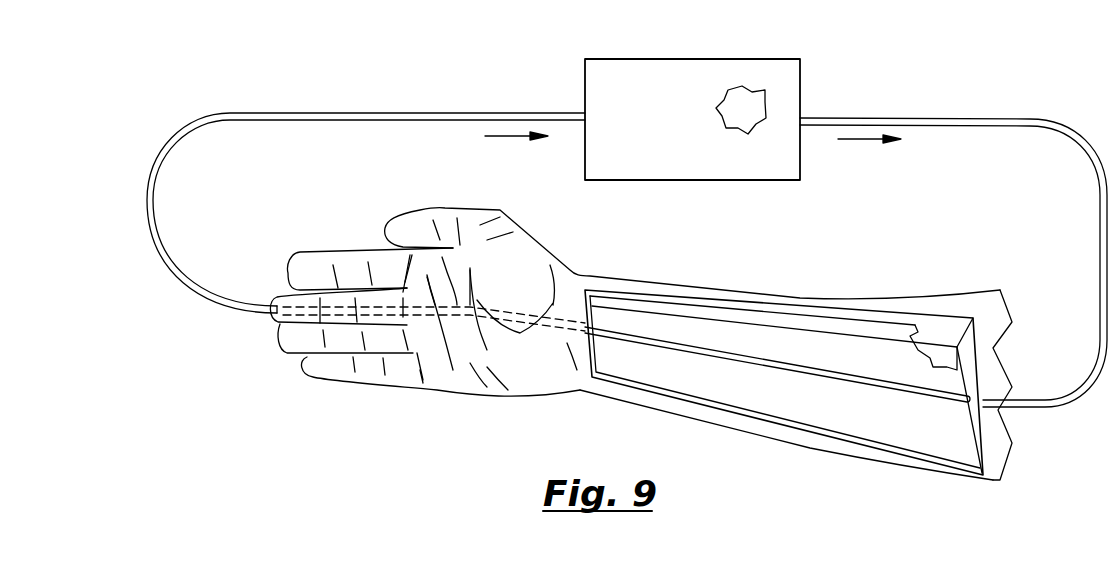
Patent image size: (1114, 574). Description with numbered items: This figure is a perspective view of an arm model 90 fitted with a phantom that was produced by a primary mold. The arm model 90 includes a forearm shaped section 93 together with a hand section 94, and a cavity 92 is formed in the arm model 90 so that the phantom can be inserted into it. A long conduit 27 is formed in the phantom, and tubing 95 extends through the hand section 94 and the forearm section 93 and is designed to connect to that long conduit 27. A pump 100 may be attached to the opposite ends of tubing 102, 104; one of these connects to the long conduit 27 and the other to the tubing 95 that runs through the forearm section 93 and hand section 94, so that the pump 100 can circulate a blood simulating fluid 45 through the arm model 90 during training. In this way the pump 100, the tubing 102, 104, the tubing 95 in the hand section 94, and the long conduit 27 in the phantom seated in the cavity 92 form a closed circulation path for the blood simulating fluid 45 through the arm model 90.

The arm model 90 is at (352, 90).
The tubing 104 is at (548, 119).
The tubing 102 is at (852, 119).
The pump 100 is at (748, 62).
The blood simulating fluid 45 is at (733, 103).
The hand section 94 is at (500, 215).
The tubing 95 is at (527, 325).
The forearm shaped section 93 is at (790, 297).
The cavity 92 is at (957, 330).
The long conduit 27 is at (732, 357).